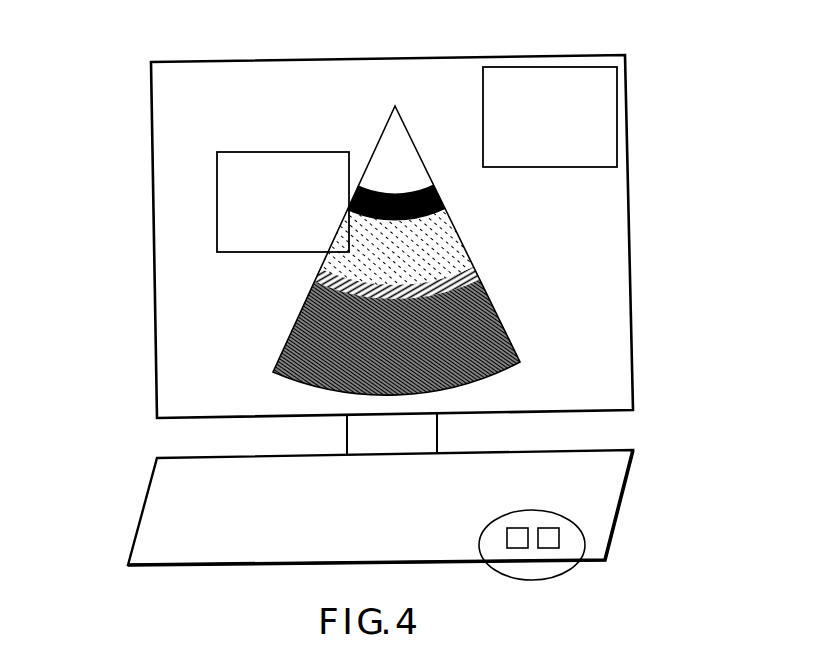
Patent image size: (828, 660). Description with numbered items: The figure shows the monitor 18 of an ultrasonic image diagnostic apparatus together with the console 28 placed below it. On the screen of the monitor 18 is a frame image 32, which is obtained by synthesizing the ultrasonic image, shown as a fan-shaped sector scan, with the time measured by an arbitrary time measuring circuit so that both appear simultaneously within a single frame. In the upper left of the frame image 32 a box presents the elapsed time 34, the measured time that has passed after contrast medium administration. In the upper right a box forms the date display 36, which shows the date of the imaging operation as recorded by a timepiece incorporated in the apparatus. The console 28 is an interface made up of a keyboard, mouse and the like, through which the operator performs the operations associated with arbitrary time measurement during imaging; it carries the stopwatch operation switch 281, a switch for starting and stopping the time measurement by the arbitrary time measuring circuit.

The monitor 18 is at (151, 113).
The frame image 32 is at (630, 271).
The elapsed time 34 is at (283, 152).
The date display 36 is at (562, 167).
The console 28 is at (621, 504).
The stopwatch operation switch 281 is at (553, 514).